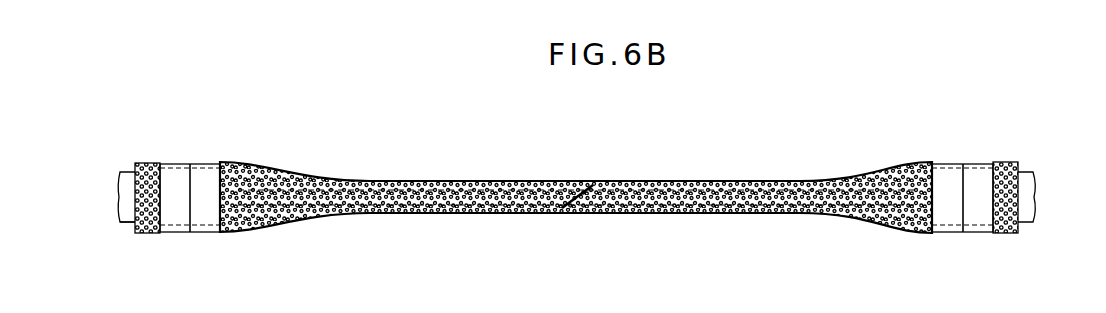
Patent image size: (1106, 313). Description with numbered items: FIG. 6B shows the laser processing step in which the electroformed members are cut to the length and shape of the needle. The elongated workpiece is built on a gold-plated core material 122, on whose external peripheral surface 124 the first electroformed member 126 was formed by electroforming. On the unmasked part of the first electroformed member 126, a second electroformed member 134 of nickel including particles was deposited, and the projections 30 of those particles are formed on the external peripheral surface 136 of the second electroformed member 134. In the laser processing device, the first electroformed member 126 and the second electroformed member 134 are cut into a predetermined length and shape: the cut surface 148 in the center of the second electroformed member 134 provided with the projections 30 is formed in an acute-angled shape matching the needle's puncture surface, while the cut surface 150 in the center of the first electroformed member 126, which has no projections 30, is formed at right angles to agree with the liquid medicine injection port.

The projections 30 is at (488, 181).
The core material 122 is at (125, 187).
The external peripheral surface 124 is at (125, 223).
The first electroformed member 126 is at (207, 162).
The second electroformed member 134 is at (147, 160).
The external peripheral surface 136 is at (578, 182).
The cut surface 148 is at (587, 213).
The cut surface 150 is at (192, 203).